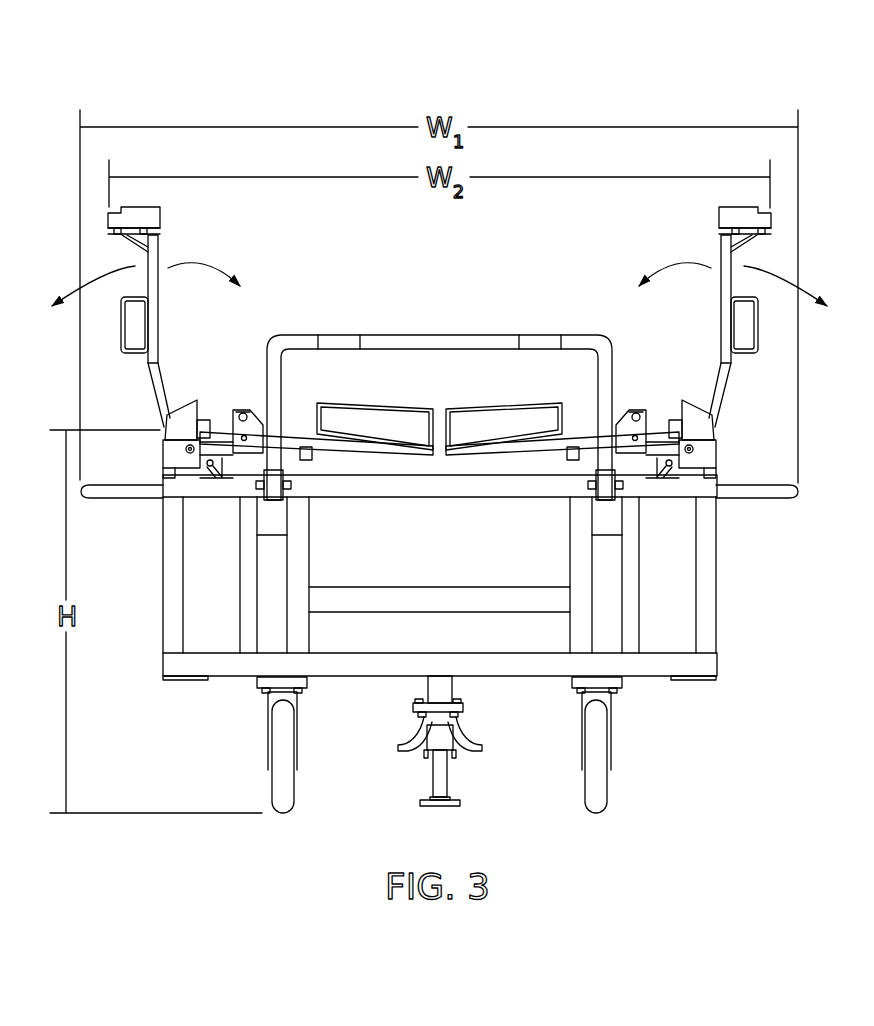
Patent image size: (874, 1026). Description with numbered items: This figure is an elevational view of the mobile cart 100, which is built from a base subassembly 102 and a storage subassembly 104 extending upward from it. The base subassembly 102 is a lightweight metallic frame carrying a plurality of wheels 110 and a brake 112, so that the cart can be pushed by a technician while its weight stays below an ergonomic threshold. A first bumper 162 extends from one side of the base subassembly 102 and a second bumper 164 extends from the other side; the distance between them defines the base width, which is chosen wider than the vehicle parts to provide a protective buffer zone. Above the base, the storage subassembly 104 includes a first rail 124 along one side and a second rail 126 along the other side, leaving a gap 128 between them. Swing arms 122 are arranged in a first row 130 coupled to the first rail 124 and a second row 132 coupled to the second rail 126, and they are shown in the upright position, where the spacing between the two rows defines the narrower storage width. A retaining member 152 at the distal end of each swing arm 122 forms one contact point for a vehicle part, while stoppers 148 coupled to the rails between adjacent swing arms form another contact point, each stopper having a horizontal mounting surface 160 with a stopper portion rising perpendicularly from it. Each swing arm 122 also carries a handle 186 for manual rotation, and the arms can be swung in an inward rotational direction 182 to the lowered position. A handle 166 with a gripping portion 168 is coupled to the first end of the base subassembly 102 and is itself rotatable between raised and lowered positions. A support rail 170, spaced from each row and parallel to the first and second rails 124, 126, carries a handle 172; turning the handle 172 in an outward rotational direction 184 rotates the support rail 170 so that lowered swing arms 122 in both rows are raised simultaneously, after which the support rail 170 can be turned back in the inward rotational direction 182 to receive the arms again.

The mobile cart 100 is at (705, 90).
The base subassembly 102 is at (742, 630).
The storage subassembly 104 is at (777, 349).
The wheels 110 is at (295, 788).
The brake 112 is at (452, 757).
The swing arms 122 is at (158, 313).
The first rail 124 is at (717, 447).
The second rail 126 is at (163, 457).
The gap 128 is at (460, 288).
The first row 130 is at (753, 378).
The second row 132 is at (128, 398).
The stoppers 148 is at (208, 408).
The retaining member 152 is at (160, 213).
The mounting surface 160 is at (167, 395).
The first bumper 162 is at (798, 492).
The second bumper 164 is at (81, 491).
The handle 166 is at (570, 318).
The gripping portion 168 is at (491, 335).
The support rail 170 is at (567, 453).
The handle 172 is at (492, 404).
The inward rotational direction 182 is at (204, 268).
The outward rotational direction 184 is at (75, 293).
The handle 186 is at (121, 325).